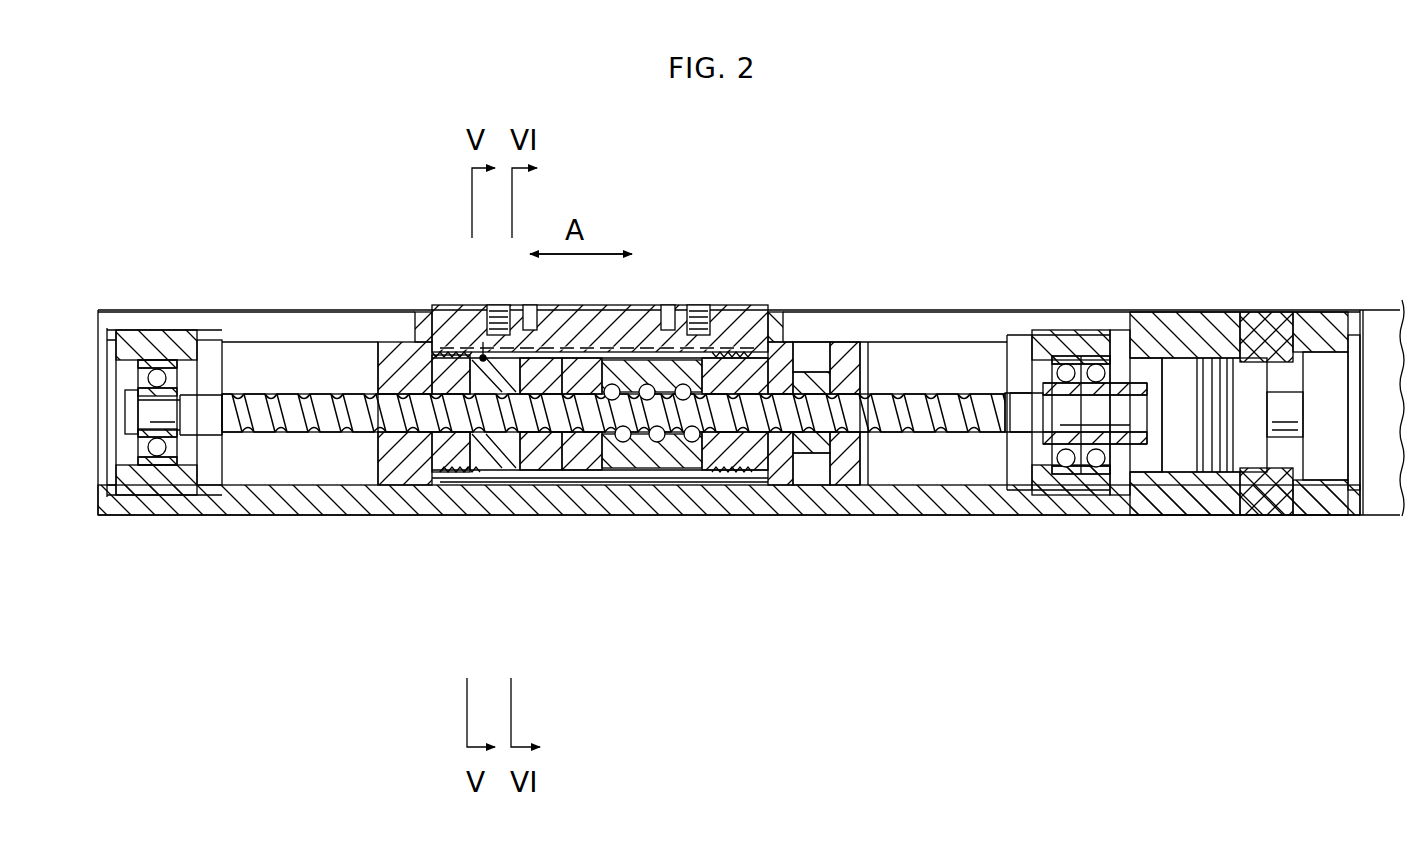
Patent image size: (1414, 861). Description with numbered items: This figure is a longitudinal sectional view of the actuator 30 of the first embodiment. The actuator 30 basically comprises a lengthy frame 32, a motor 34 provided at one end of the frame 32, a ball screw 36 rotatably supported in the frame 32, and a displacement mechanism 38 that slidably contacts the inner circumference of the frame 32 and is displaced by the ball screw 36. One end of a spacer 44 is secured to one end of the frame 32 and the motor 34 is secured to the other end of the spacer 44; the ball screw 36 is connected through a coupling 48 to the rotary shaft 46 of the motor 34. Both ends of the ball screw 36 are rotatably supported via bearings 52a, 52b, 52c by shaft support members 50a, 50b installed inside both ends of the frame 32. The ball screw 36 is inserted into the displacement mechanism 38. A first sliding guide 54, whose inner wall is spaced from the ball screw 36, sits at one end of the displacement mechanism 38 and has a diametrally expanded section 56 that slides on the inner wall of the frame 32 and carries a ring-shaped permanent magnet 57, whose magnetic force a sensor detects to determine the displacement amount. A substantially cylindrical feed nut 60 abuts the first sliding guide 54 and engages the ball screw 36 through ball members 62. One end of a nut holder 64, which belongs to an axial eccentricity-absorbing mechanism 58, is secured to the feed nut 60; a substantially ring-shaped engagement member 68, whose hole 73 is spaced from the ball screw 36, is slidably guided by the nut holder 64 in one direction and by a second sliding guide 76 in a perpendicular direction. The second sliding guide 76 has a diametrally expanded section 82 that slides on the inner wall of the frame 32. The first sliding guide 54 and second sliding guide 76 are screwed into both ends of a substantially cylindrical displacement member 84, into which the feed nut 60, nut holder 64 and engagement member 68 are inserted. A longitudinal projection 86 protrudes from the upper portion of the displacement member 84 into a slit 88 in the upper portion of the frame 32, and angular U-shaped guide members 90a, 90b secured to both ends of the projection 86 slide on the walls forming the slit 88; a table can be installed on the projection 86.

The actuator 30 is at (1168, 100).
The frame 32 is at (282, 505).
The motor 34 is at (1348, 503).
The ball screw 36 is at (912, 393).
The displacement mechanism 38 is at (742, 302).
The spacer 44 is at (1180, 500).
The rotary shaft 46 is at (1283, 312).
The coupling 48 is at (1218, 312).
The shaft support member 50a is at (1075, 330).
The shaft support member 50b is at (152, 330).
The bearing 52a is at (1085, 500).
The bearing 52b is at (1040, 503).
The bearing 52c is at (150, 500).
The first sliding guide 54 is at (770, 490).
The diametrally expanded section 56 is at (795, 478).
The permanent magnet 57 is at (845, 487).
The axial eccentricity-absorbing mechanism 58 is at (517, 501).
The feed nut 60 is at (645, 482).
The ball members 62 is at (692, 478).
The nut holder 64 is at (555, 485).
The engagement member 68 is at (505, 485).
The hole 73 is at (483, 350).
The second sliding guide 76 is at (440, 495).
The diametrally expanded section 82 is at (395, 490).
The displacement member 84 is at (608, 490).
The projection 86 is at (652, 305).
The slit 88 is at (337, 318).
The guide member 90a is at (782, 312).
The guide member 90b is at (425, 320).